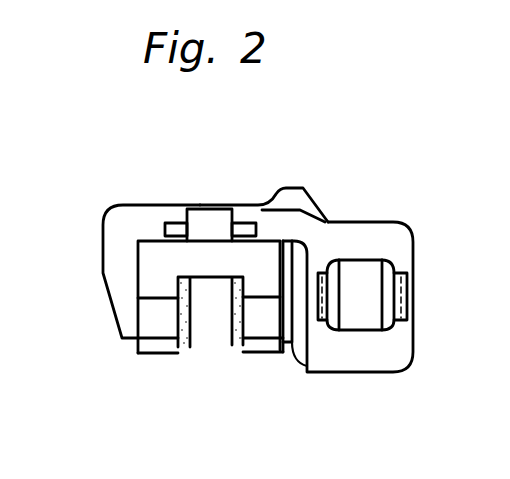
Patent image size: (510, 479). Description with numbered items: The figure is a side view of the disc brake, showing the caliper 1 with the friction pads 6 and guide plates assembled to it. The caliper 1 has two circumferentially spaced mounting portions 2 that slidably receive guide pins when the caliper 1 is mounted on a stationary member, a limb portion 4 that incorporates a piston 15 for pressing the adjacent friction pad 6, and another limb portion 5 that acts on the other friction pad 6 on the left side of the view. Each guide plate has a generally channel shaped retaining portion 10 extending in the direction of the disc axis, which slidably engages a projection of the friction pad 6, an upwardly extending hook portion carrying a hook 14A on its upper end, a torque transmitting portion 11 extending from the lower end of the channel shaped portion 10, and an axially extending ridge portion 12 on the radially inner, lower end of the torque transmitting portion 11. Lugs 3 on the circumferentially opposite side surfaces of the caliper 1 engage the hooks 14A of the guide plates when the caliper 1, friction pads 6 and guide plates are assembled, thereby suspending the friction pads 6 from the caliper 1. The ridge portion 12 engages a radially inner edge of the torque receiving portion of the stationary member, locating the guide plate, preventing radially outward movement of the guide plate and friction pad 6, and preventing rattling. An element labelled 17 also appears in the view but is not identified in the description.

The caliper 1 is at (300, 186).
The mounting portion 2 is at (365, 270).
The lug 3 is at (180, 227).
The limb portion 4 is at (410, 343).
The limb portion 5 is at (122, 292).
The friction pad 6 is at (185, 353).
The channel shaped retaining portion 10 is at (143, 267).
The torque transmitting portion 11 is at (147, 323).
The ridge portion 12 is at (152, 350).
The hook 14A is at (210, 212).
The piston 15 is at (302, 360).
The wall 17 is at (292, 353).